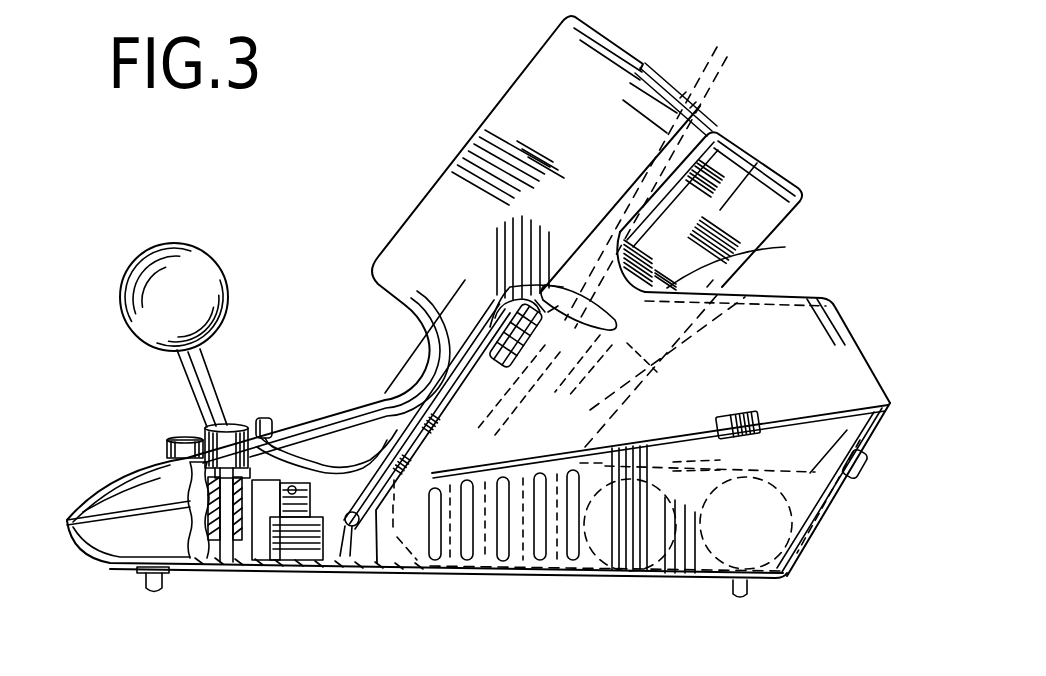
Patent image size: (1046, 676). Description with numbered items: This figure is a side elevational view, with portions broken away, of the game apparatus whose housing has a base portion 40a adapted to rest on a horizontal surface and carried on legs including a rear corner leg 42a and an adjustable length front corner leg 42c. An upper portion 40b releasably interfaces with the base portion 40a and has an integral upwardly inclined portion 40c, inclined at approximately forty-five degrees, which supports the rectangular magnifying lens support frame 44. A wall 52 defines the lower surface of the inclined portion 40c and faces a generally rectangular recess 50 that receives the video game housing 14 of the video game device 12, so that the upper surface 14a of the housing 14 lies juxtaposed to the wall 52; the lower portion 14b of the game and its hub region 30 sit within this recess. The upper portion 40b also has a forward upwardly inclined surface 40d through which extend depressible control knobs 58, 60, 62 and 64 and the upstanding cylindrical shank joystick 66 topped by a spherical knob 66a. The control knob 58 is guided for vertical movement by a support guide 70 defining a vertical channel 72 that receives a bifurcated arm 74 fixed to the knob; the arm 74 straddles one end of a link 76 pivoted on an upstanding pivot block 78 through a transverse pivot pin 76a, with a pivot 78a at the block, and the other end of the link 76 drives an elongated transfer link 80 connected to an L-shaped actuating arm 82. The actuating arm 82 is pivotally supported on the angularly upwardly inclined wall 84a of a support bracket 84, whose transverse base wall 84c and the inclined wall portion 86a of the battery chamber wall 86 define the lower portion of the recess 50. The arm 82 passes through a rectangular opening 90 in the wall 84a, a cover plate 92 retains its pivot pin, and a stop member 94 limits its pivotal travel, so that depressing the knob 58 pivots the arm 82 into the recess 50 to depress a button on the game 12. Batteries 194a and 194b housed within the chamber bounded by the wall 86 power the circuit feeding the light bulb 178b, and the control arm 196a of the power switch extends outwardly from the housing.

The video game device 12 is at (804, 165).
The video game housing 14 is at (797, 215).
The upper surface of video game housing 14a is at (703, 127).
The cassette lower portion 14b is at (743, 147).
The cassette hub 30 is at (743, 263).
The base portion 40a is at (583, 567).
The upper portion 40b is at (803, 323).
The upwardly inclined portion 40c is at (652, 85).
The forward upwardly inclined surface 40d is at (112, 483).
The rear corner leg 42a is at (743, 596).
The adjustable length front corner leg 42c is at (148, 584).
The magnifying lens support frame 44 is at (420, 227).
The recess 50 is at (740, 281).
The wall 52 is at (649, 176).
The depressible control knob 58 is at (230, 427).
The depressible control knob 60 is at (170, 446).
The depressible control knob 62 is at (262, 418).
The depressible control knob 64 is at (258, 427).
The joystick 66 is at (237, 343).
The spherical knob 66a is at (195, 268).
The support guide 70 is at (249, 565).
The vertical channel 72 is at (212, 562).
The bifurcated arm 74 is at (225, 562).
The link 76 is at (249, 556).
The transverse pivot pin 76a is at (312, 466).
The pivot block 78 is at (295, 560).
The pivot pin 78a is at (297, 486).
The transfer link 80 is at (352, 540).
The L-shaped actuating arm 82 is at (520, 312).
The support bracket 84 is at (390, 573).
The angularly upwardly inclined wall 84a is at (612, 328).
The transverse base wall 84c is at (453, 573).
The battery chamber wall 86 is at (755, 466).
The inclined wall portion 86a is at (560, 447).
The rectangular opening 90 is at (512, 373).
The cover plate 92 is at (550, 302).
The stop member 94 is at (533, 300).
The light bulb 178b is at (359, 671).
The battery 194a is at (660, 576).
The battery 194b is at (717, 583).
The control arm 196a is at (738, 414).